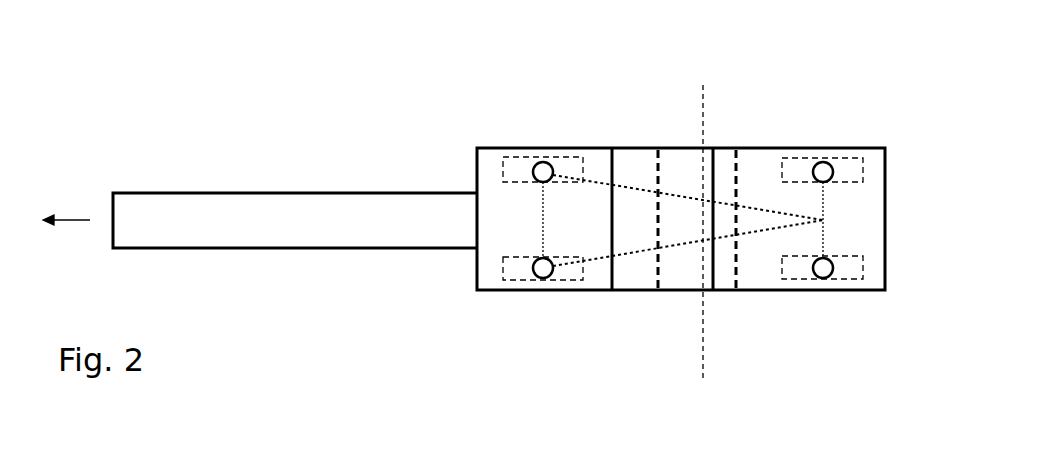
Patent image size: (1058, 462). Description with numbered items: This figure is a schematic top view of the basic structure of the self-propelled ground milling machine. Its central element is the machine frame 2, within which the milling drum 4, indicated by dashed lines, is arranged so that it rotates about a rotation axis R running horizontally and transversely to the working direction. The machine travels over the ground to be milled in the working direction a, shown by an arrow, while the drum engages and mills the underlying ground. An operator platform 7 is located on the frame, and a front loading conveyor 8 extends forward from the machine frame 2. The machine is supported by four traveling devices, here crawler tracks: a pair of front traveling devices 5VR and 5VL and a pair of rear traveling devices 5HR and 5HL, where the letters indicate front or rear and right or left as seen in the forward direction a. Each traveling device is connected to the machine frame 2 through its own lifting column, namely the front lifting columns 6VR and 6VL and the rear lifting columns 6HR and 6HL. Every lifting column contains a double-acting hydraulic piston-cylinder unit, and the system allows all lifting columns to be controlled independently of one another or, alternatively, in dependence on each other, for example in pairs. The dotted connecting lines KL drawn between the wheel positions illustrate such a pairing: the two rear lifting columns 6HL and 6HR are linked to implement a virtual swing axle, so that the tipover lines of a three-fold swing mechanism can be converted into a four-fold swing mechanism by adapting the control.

The machine frame 2 is at (848, 153).
The milling drum 4 is at (730, 160).
The operator platform 7 is at (623, 160).
The front loading conveyor 8 is at (292, 208).
The rotation axis R is at (703, 248).
The working direction a is at (66, 233).
The front right traveling device 5VR is at (515, 172).
The front left traveling device 5VL is at (515, 268).
The rear right traveling device 5HR is at (857, 170).
The rear left traveling device 5HL is at (848, 268).
The front right lifting column 6VR is at (543, 172).
The front left lifting column 6VL is at (543, 268).
The rear right lifting column 6HR is at (824, 165).
The rear left lifting column 6HL is at (824, 278).
The steering lines KL is at (645, 257).